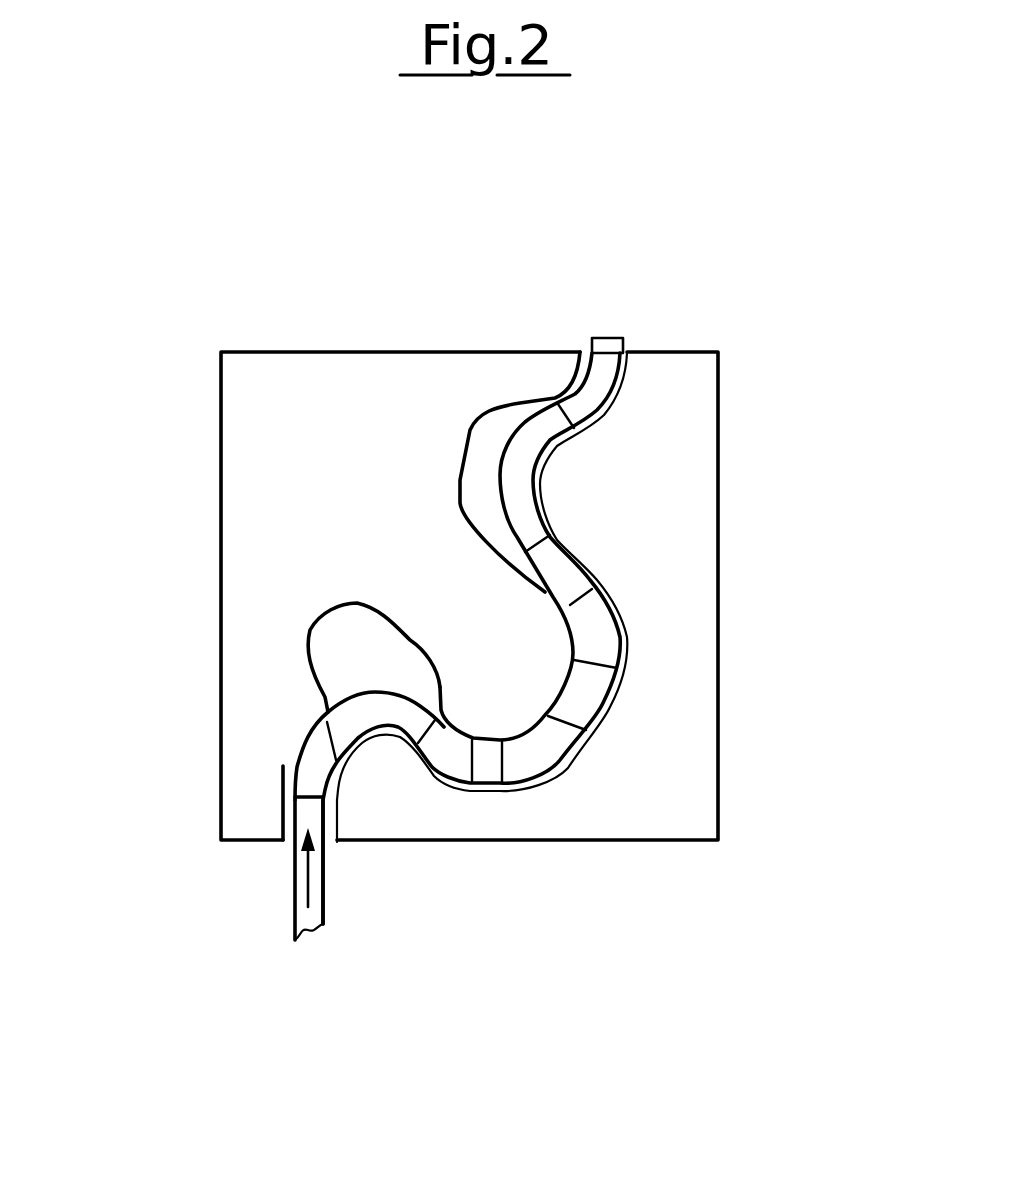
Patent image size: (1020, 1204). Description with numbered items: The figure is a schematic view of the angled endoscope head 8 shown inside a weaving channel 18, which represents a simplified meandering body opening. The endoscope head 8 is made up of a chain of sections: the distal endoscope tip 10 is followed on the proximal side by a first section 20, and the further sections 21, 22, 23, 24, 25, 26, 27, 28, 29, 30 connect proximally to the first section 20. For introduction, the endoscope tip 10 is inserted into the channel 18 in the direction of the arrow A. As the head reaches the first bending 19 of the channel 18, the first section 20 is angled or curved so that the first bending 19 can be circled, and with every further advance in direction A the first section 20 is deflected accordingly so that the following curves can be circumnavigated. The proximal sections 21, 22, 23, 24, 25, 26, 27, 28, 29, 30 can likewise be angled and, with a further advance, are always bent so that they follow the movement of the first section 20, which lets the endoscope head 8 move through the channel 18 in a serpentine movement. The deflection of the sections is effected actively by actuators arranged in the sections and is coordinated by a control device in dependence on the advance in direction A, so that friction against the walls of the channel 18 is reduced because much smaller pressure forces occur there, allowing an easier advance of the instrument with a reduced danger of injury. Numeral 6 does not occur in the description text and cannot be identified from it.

The inlet channel 6 is at (282, 903).
The endoscope head 8 is at (626, 693).
The endoscope tip 10 is at (613, 338).
The weaving channel 18 is at (624, 600).
The first bending 19 is at (339, 800).
The first section 20 is at (607, 380).
The section 21 is at (528, 470).
The section 22 is at (558, 560).
The section 23 is at (599, 627).
The section 24 is at (588, 692).
The section 25 is at (565, 745).
The section 26 is at (490, 768).
The section 27 is at (455, 758).
The section 28 is at (363, 715).
The section 29 is at (337, 742).
The section 30 is at (283, 766).
The direction of advance A is at (323, 880).